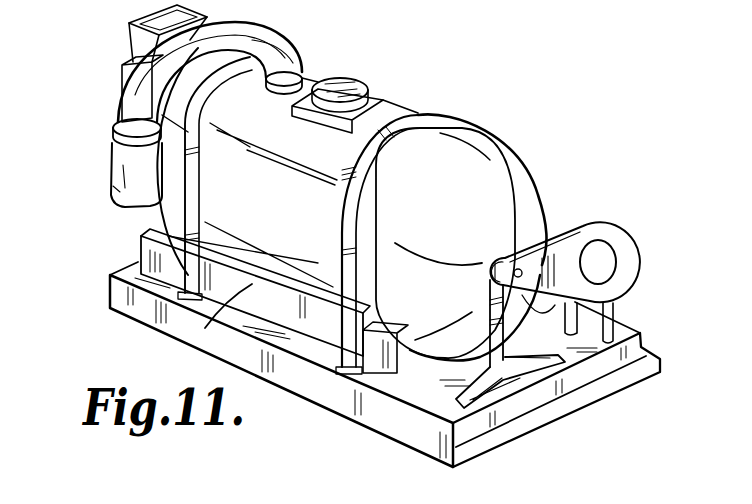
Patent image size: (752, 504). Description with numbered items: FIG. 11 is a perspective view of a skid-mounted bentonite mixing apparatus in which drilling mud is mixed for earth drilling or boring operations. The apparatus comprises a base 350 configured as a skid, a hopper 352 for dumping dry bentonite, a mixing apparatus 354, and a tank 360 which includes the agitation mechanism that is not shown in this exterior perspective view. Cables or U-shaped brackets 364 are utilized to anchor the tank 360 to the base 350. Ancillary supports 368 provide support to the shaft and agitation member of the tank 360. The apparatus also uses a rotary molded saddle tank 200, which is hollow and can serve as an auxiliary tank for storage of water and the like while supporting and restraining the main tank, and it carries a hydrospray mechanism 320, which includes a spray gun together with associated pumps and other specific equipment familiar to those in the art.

The saddle tank 200 is at (122, 312).
The hydrospray mechanism 320 is at (583, 240).
The base 350 is at (110, 275).
The hopper 352 is at (129, 23).
The mixing apparatus 354 is at (147, 87).
The tank 360 is at (397, 110).
The U-shaped bracket 364 is at (150, 208).
The ancillary support 368 is at (600, 320).